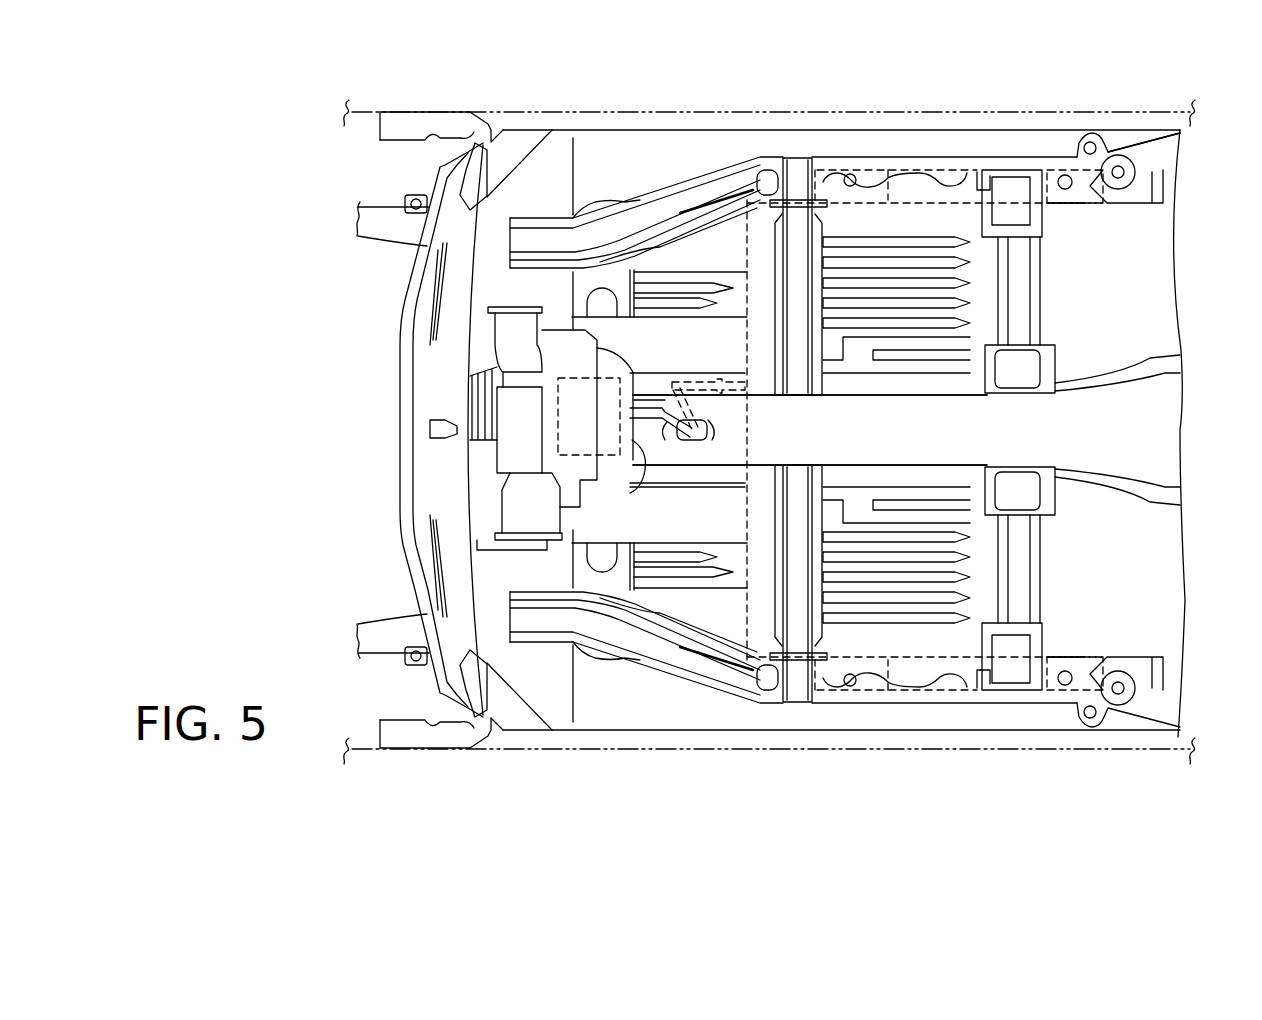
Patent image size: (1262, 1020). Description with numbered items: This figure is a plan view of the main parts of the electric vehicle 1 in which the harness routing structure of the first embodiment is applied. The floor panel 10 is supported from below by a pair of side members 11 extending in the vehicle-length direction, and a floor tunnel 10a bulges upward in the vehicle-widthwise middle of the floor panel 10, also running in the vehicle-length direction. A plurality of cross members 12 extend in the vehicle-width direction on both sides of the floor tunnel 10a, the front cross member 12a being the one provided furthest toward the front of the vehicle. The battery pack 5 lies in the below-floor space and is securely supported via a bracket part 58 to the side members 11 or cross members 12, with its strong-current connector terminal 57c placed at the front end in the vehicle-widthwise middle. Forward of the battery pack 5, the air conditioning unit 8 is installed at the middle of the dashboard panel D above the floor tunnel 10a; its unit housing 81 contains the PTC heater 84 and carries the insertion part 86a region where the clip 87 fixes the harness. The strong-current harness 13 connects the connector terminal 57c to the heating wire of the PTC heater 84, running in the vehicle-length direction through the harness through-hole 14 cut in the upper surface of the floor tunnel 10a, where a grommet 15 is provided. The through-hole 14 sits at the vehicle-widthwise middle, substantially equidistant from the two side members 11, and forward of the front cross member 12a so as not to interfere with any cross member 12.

The electric vehicle 1 is at (468, 84).
The battery pack 5 is at (1127, 331).
The air conditioning unit 8 is at (580, 518).
The floor panel 10 is at (1107, 298).
The floor tunnel 10a is at (1108, 434).
The side member 11 is at (917, 170).
The cross member 12 is at (1018, 256).
The front cross member 12a is at (783, 277).
The strong-current harness 13 is at (667, 428).
The harness through-hole 14 is at (703, 419).
The grommet 15 is at (700, 437).
The strong-current connector terminal 57c is at (700, 380).
The bracket part 58 is at (846, 168).
The unit housing 81 is at (556, 476).
The PTC heater 84 is at (575, 410).
The mount portion 86a is at (635, 440).
The clip 87 is at (625, 415).
The dashboard panel D is at (453, 525).